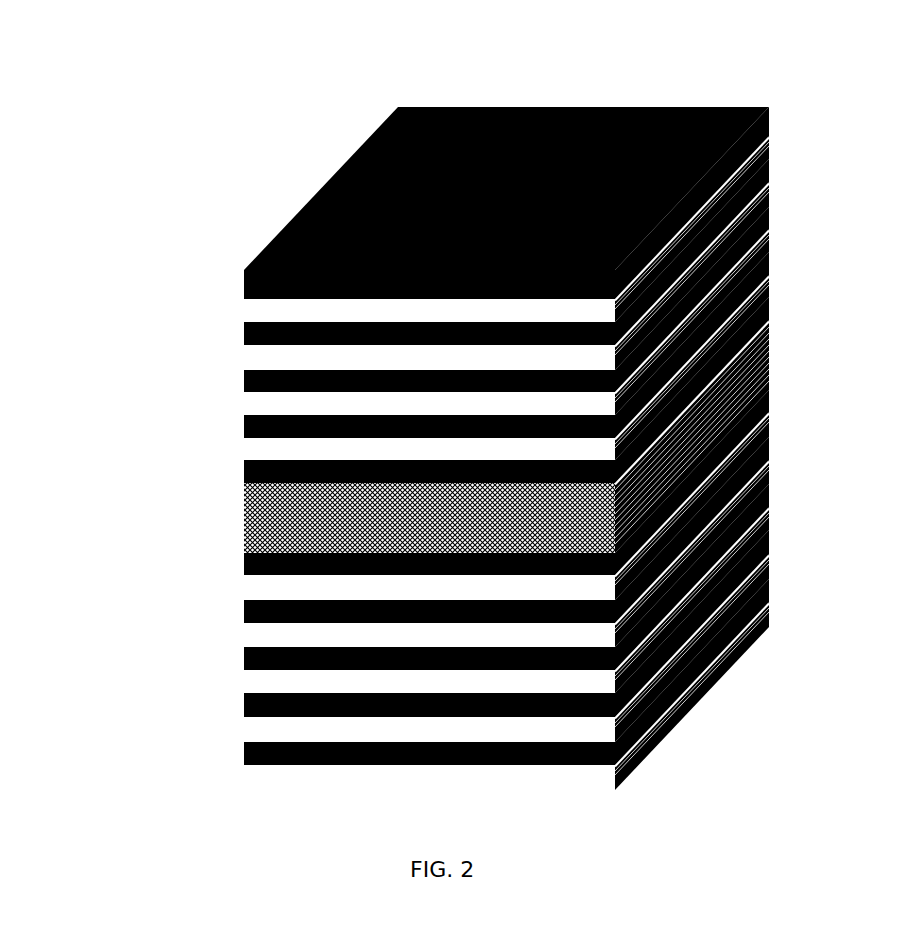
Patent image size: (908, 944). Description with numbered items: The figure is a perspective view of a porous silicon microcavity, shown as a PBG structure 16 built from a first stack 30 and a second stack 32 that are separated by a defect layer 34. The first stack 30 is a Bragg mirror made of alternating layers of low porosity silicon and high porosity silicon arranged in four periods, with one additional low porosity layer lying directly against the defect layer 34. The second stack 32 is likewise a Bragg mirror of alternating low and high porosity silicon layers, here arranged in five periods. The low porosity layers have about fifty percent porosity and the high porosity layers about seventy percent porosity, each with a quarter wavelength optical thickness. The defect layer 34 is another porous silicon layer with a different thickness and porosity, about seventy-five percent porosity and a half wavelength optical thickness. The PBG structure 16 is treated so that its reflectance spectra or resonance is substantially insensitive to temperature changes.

The PBG structure 16 is at (750, 50).
The first stack 30 is at (244, 272).
The second stack 32 is at (244, 555).
The defect layer 34 is at (243, 521).